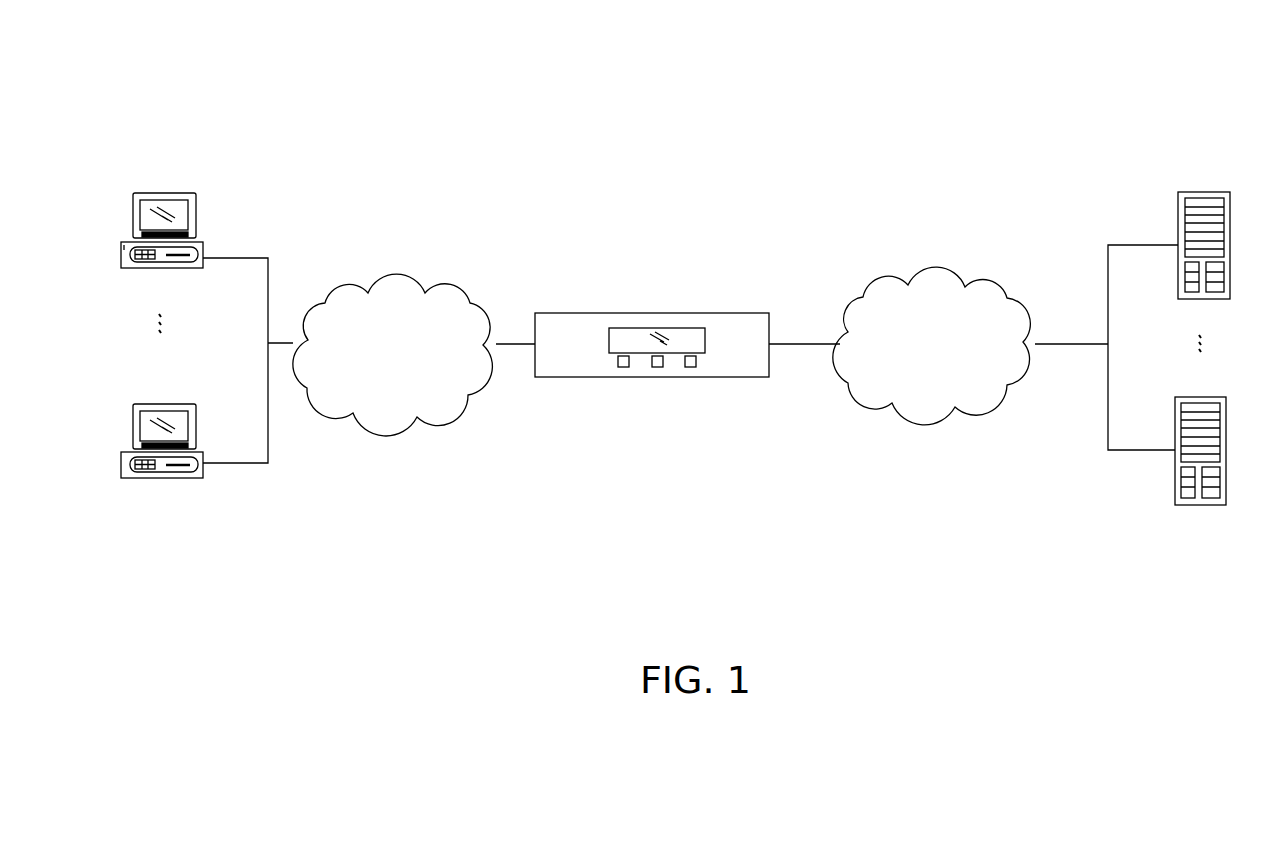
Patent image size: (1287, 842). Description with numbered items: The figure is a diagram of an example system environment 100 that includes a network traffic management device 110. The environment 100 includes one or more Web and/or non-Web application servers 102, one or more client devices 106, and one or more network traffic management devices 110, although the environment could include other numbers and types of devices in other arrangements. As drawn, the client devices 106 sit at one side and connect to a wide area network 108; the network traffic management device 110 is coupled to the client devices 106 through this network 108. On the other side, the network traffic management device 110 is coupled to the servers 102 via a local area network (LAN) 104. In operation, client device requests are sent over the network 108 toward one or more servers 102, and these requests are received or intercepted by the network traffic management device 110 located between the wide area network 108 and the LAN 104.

The system environment 100 is at (1160, 79).
The application servers 102 is at (1176, 193).
The local area network (LAN) 104 is at (959, 373).
The client devices 106 is at (203, 254).
The wide area network 108 is at (414, 380).
The network traffic management device 110 is at (660, 313).